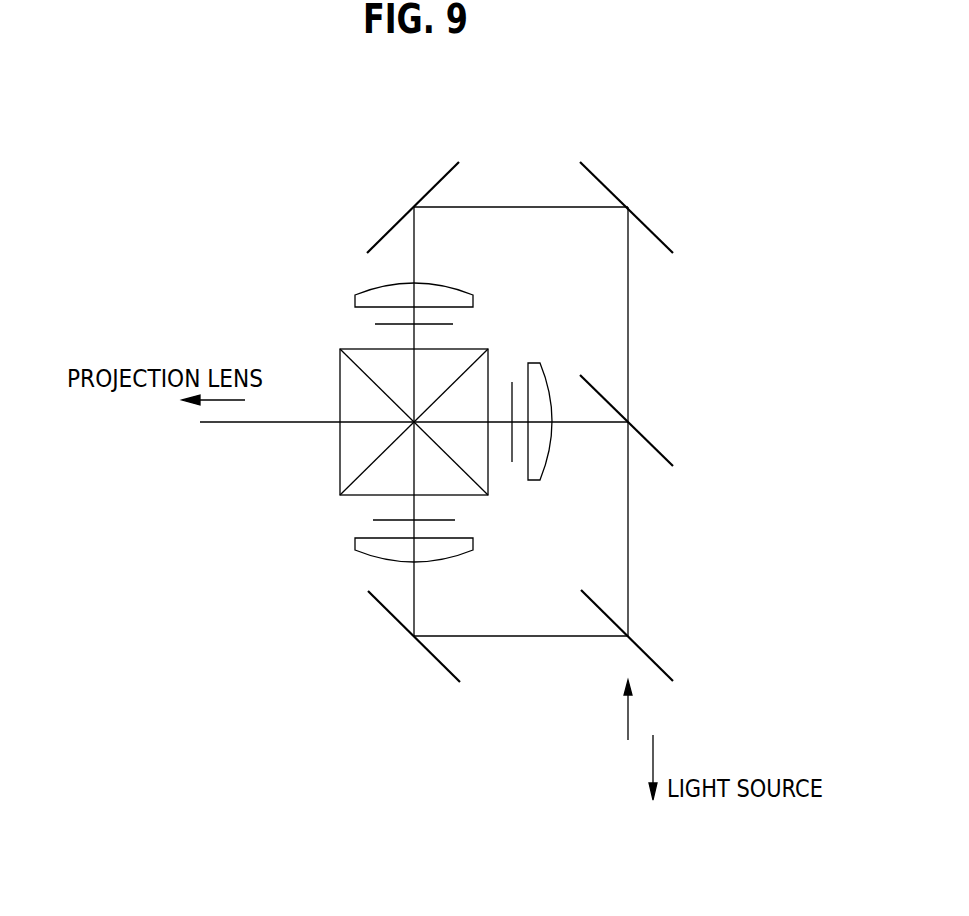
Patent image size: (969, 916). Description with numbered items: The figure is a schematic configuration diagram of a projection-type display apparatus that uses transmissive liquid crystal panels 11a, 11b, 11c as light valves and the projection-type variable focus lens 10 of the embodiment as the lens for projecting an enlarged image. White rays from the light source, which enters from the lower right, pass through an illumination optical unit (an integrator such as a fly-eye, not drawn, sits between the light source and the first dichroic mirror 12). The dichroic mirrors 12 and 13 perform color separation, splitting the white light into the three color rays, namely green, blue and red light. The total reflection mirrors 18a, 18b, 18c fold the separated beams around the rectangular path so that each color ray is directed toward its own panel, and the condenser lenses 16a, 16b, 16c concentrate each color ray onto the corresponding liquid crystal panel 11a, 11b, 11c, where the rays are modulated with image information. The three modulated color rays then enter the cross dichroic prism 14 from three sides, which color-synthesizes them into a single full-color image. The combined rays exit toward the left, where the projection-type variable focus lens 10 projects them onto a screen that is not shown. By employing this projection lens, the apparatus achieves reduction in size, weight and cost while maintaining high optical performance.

The projection-type variable focus lens 10 is at (272, 149).
The transmissive liquid crystal panel 11a is at (455, 520).
The transmissive liquid crystal panel 11b is at (512, 387).
The transmissive liquid crystal panel 11c is at (376, 324).
The dichroic mirror 12 is at (659, 665).
The dichroic mirror 13 is at (657, 451).
The cross dichroic prism 14 is at (345, 472).
The condenser lens 16a is at (453, 552).
The condenser lens 16b is at (543, 482).
The condenser lens 16c is at (457, 291).
The total reflection mirror 18a is at (433, 657).
The total reflection mirror 18b is at (653, 231).
The total reflection mirror 18c is at (375, 245).